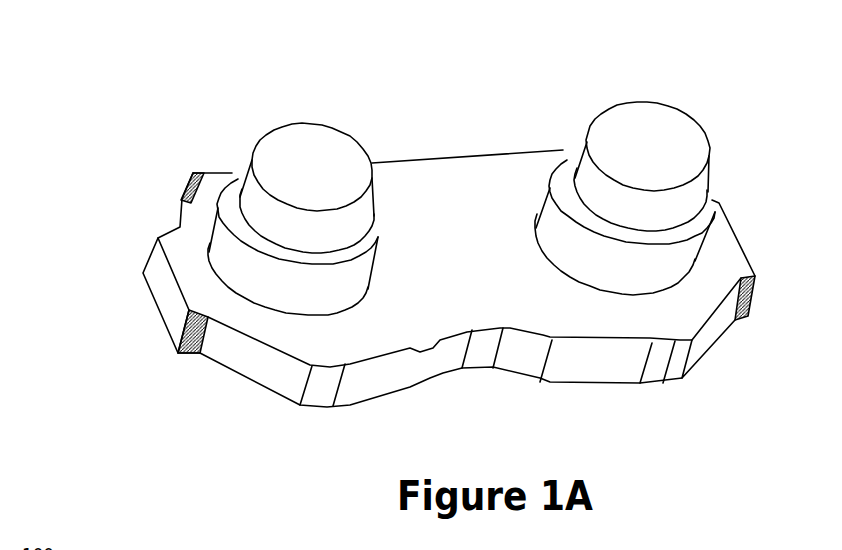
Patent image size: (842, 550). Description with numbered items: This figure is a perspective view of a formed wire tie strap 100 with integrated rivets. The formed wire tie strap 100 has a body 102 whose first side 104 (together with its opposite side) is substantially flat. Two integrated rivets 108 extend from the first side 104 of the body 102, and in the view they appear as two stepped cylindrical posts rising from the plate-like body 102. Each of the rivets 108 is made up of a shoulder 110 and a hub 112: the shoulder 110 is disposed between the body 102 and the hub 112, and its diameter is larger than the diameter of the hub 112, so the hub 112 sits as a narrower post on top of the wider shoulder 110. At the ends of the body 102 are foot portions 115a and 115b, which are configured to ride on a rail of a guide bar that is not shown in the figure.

The formed wire tie strap 100 is at (97, 122).
The body 102 is at (360, 338).
The first side 104 is at (462, 250).
The integrated rivets 108 is at (643, 140).
The shoulder 110 is at (643, 260).
The hub 112 is at (585, 170).
The foot portion 115a is at (655, 350).
The foot portion 115b is at (317, 383).